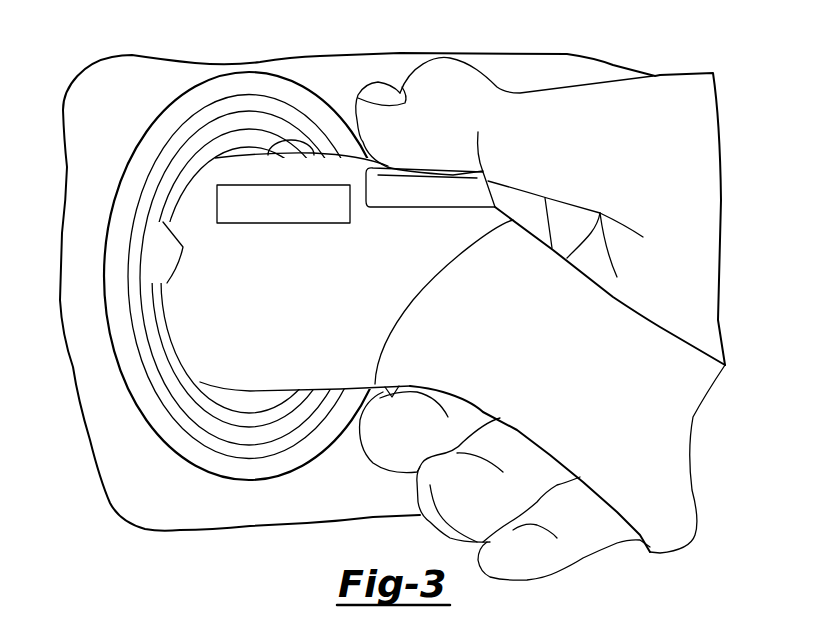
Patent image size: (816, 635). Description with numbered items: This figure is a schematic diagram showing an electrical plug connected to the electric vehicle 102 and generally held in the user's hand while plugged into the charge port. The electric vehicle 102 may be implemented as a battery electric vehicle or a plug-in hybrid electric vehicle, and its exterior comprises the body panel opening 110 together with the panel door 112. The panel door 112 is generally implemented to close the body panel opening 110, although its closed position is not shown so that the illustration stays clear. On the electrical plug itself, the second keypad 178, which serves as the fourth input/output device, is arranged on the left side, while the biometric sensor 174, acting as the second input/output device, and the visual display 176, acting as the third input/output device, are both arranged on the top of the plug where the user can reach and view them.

The electric vehicle 102 is at (195, 75).
The body panel opening 110 is at (163, 111).
The panel door 112 is at (463, 60).
The biometric sensor 174 is at (418, 178).
The visual display 176 is at (288, 143).
The second keypad 178 is at (280, 223).